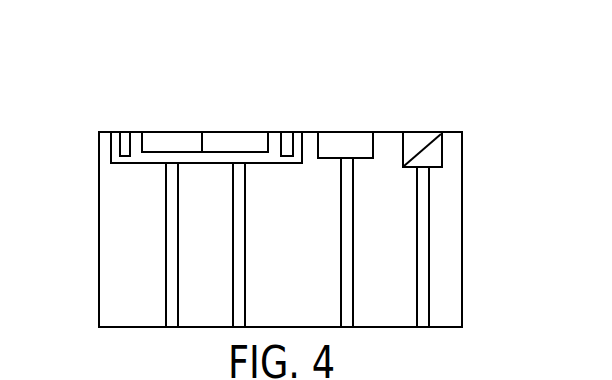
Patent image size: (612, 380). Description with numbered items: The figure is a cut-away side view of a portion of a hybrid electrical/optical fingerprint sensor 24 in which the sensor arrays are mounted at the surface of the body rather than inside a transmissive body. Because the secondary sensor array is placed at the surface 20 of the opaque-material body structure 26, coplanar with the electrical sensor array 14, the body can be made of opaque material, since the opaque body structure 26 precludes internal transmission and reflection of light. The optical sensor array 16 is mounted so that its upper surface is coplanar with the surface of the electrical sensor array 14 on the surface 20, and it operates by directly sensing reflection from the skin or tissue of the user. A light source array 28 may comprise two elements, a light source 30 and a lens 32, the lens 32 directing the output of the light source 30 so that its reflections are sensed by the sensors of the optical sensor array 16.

The semiconductor device 24 is at (125, 88).
The electrical sensor array 14 is at (268, 117).
The optical sensor array 16 is at (365, 117).
The light source array 28 is at (440, 117).
The surface 20 is at (446, 133).
The light source 30 is at (442, 149).
The lens 32 is at (404, 157).
The opaque-material body structure 26 is at (455, 268).